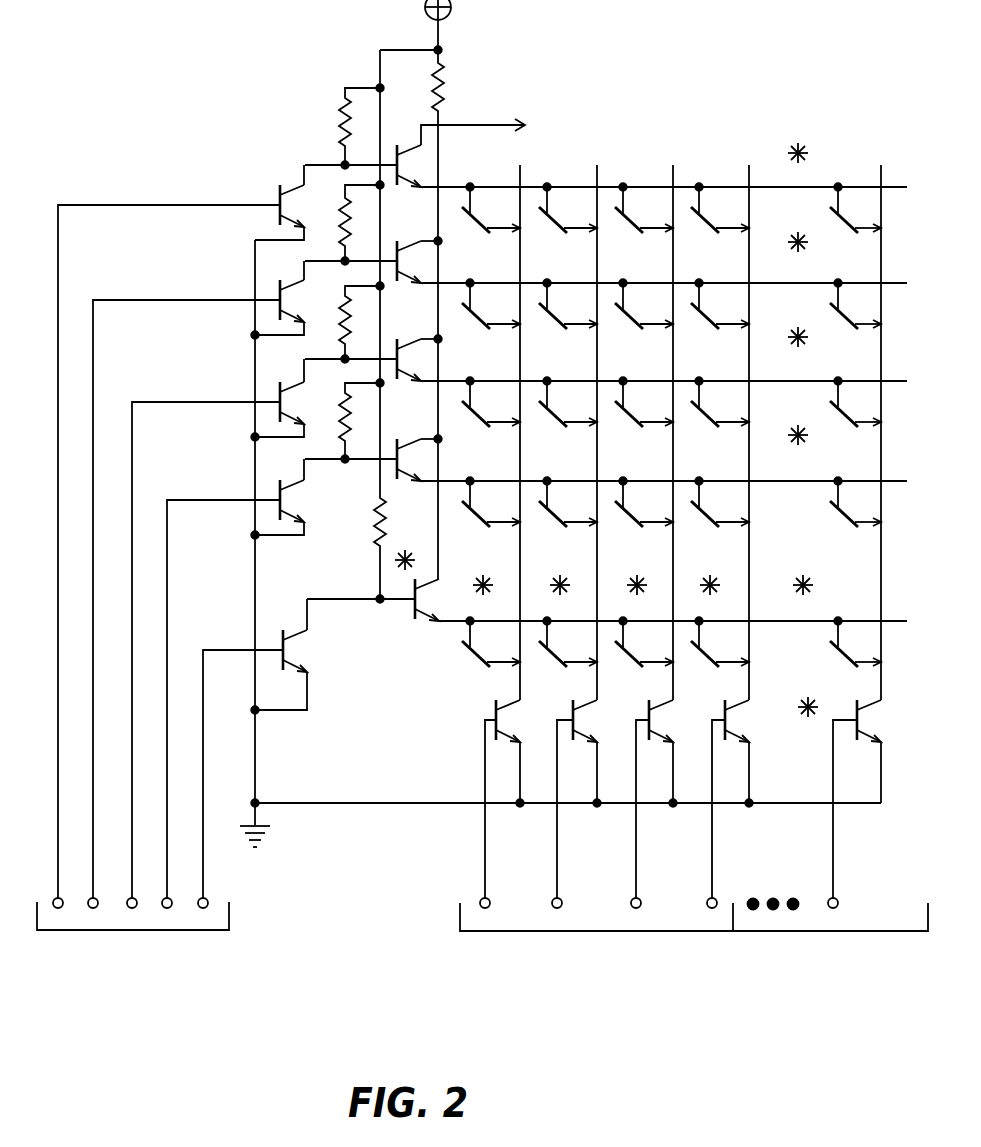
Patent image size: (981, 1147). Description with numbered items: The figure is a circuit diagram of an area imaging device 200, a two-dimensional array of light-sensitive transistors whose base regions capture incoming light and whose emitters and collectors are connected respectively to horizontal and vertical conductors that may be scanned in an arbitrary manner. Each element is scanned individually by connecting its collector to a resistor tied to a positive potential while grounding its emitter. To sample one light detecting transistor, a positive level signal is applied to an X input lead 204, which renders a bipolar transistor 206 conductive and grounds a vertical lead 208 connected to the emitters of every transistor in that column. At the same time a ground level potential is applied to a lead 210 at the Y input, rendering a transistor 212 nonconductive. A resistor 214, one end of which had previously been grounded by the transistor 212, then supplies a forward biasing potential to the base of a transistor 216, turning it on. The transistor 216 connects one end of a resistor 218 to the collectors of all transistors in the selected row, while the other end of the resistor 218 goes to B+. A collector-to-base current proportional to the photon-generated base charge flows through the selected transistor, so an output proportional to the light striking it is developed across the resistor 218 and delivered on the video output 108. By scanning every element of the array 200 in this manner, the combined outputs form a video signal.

The area imaging device 200 is at (482, 510).
The X input lead 204 is at (711, 857).
The transistor 206 is at (729, 719).
The vertical lead 208 is at (750, 538).
The lead 210 is at (93, 821).
The transistor 212 is at (294, 282).
The resistor 214 is at (343, 215).
The transistor 216 is at (398, 252).
The resistor 218 is at (440, 66).
The video output line 108 is at (478, 125).